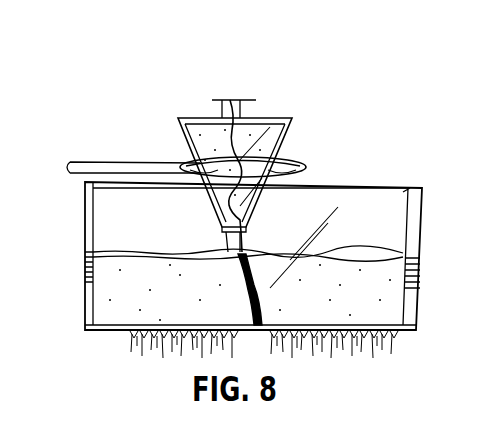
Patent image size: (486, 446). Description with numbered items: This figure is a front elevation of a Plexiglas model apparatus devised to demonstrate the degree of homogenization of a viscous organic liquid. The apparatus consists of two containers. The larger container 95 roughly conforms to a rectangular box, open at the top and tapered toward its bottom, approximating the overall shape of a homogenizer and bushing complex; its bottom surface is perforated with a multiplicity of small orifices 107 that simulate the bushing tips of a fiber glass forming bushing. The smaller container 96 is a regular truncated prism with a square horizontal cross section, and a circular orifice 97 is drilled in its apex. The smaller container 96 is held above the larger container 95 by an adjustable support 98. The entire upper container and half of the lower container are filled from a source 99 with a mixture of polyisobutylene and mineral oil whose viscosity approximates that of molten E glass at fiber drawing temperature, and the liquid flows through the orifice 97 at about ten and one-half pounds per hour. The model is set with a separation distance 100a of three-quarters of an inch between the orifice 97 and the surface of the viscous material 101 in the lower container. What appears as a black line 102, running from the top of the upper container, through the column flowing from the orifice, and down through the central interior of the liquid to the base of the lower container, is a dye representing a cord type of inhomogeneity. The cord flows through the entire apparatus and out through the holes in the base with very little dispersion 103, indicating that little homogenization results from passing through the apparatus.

The larger container 95 is at (81, 241).
The smaller container 96 is at (292, 140).
The orifice 97 is at (228, 226).
The adjustable support 98 is at (126, 160).
The source 99 is at (230, 100).
The separation distance 100a is at (208, 231).
The surface of the viscous material 101 is at (372, 254).
The black line 102 is at (242, 103).
The dispersion 103 is at (262, 306).
The small orifices 107 is at (130, 328).